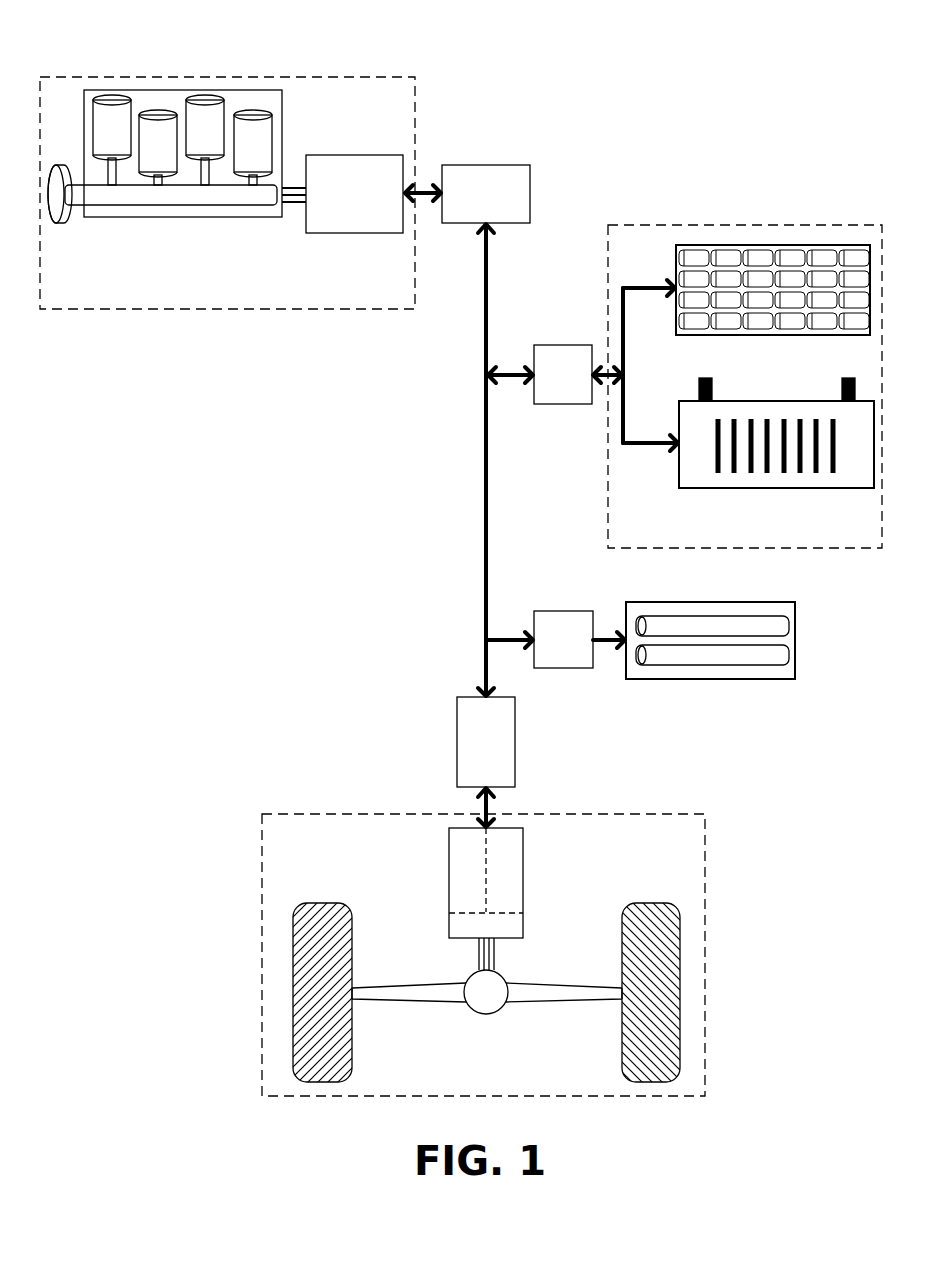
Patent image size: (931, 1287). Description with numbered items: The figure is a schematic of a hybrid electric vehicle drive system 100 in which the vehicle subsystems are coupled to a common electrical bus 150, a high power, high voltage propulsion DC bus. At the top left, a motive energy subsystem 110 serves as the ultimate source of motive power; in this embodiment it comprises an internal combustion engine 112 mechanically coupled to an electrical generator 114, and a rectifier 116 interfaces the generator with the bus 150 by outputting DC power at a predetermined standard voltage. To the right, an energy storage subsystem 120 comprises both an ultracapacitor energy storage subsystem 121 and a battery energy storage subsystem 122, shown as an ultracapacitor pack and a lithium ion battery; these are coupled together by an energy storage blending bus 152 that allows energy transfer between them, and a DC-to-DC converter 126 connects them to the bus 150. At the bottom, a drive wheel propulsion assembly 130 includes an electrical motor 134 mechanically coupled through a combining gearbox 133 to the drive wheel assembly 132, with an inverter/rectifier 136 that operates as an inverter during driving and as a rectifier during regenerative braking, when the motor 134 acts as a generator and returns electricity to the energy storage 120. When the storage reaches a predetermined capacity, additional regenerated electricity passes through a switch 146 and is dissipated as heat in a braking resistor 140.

The drive system 100 is at (466, 53).
The motive energy subsystem 110 is at (228, 312).
The internal combustion engine 112 is at (183, 220).
The electrical generator 114 is at (352, 235).
The rectifier 116 is at (487, 165).
The energy storage subsystem 120 is at (710, 224).
The ultracapacitor energy storage subsystem 121 is at (676, 245).
The battery energy storage subsystem 122 is at (710, 488).
The DC-to-DC converter 126 is at (580, 345).
The drive wheel propulsion assembly 130 is at (634, 814).
The drive wheel assembly 132 is at (492, 1015).
The combining gearbox 133 is at (503, 936).
The electrical motor 134 is at (447, 888).
The inverter/rectifier 136 is at (457, 742).
The braking resistor 140 is at (795, 640).
The switch 146 is at (578, 611).
The electrical bus 150 is at (482, 446).
The energy storage blending bus 152 is at (627, 398).